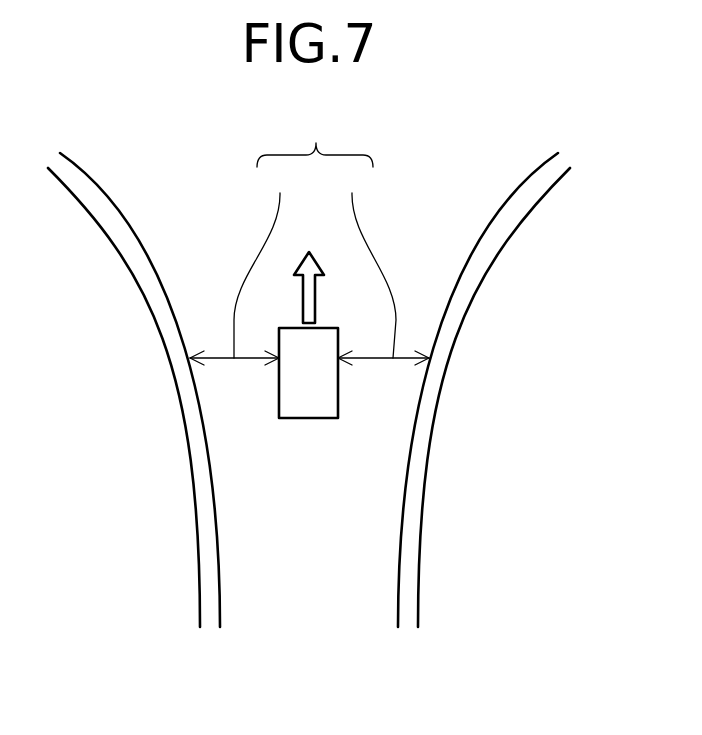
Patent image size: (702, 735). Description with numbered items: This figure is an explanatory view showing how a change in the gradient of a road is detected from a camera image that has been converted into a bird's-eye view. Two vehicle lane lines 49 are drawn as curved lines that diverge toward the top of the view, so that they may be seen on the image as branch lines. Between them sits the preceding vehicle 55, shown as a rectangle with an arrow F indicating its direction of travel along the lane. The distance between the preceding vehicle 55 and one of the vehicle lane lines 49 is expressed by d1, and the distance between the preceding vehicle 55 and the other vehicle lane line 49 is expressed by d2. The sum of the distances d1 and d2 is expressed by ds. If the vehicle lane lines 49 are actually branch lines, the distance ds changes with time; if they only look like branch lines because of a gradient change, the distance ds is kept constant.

The vehicle lane lines 49 is at (188, 438).
The preceding vehicle 55 is at (310, 418).
The force F is at (317, 295).
The distance d1 is at (241, 266).
The distance d2 is at (383, 266).
The sum of the distances ds is at (315, 136).